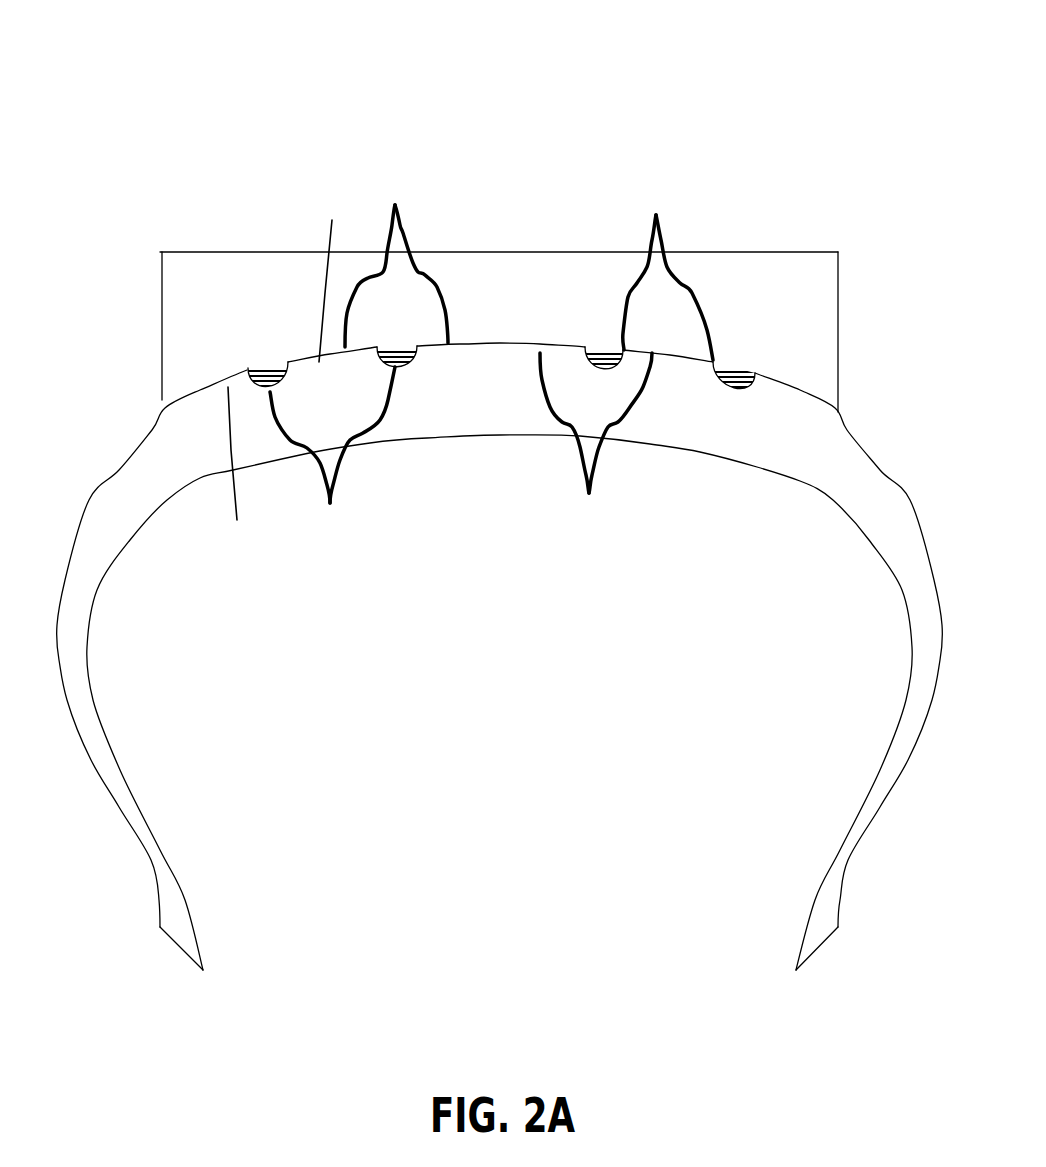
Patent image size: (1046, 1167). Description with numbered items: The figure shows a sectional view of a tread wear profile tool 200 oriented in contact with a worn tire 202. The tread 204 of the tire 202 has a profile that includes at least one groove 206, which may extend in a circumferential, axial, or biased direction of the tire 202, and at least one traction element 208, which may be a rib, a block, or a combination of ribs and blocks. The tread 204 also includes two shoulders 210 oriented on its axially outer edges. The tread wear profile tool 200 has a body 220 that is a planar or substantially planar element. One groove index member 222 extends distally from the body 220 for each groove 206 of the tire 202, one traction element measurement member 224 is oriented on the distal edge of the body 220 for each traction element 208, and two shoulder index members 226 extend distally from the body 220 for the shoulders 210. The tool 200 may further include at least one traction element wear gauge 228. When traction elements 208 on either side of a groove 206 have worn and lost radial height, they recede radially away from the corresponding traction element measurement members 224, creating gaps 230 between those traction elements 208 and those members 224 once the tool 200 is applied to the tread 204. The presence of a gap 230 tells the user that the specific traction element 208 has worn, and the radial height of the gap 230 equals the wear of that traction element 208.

The tread wear profile tool 200 is at (209, 120).
The tire 202 is at (757, 452).
The tread 204 is at (303, 347).
The groove 206 is at (332, 455).
The traction element 208 is at (596, 443).
The shoulder 210 is at (158, 428).
The body 220 is at (757, 277).
The groove index member 222 is at (668, 270).
The traction element measurement member 224 is at (396, 257).
The shoulder index member 226 is at (172, 395).
The traction element wear gauge 228 is at (265, 363).
The gap 230 is at (282, 371).